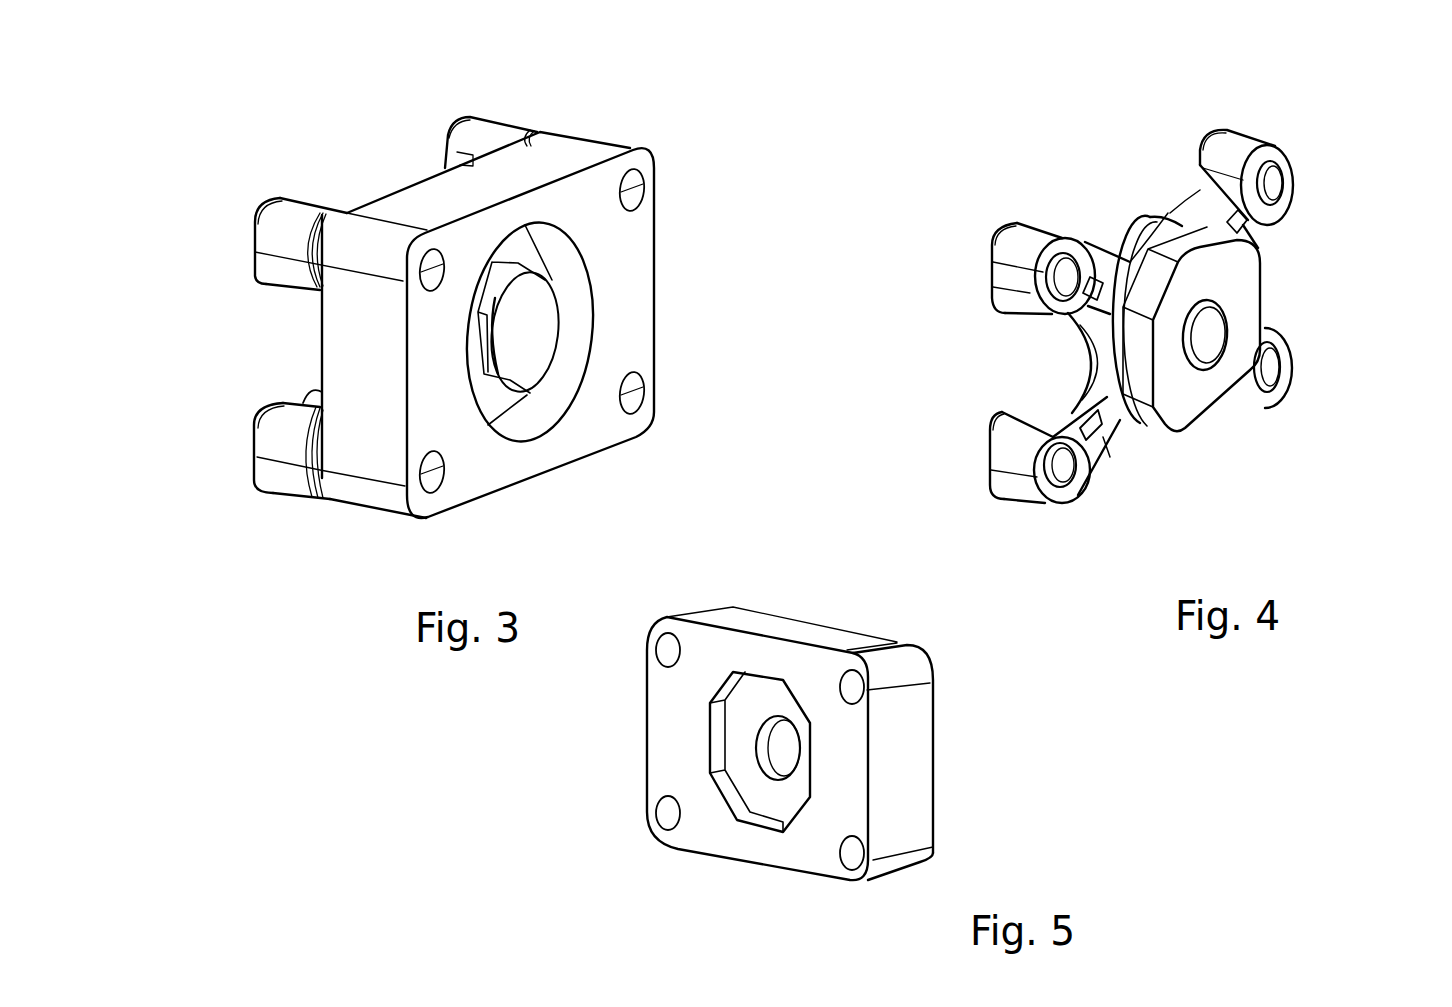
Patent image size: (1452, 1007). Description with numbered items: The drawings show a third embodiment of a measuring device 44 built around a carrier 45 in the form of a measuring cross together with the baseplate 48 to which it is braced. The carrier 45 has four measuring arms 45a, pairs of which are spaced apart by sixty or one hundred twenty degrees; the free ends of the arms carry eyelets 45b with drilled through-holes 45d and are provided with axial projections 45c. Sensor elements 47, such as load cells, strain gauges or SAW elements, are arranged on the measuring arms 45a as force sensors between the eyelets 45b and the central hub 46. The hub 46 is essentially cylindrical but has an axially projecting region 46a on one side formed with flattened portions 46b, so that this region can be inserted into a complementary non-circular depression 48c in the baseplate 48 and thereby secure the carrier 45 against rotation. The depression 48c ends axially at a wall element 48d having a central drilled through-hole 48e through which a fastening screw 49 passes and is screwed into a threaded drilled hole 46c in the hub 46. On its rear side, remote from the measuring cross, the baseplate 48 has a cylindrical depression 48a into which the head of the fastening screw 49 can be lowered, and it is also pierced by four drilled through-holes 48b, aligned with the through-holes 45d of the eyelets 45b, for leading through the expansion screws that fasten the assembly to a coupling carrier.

In FIG. 3, the measuring device 44 is at (525, 487).
In FIG. 4, the carrier 45 is at (1338, 300).
In FIG. 3, the measuring arms 45a is at (320, 390).
In FIG. 4, the measuring arms 45a is at (1210, 197).
In FIG. 3, the eyelets 45b is at (478, 128).
In FIG. 4, the eyelets 45b is at (1241, 145).
In FIG. 3, the axial projections 45c is at (465, 120).
In FIG. 4, the axial projections 45c is at (1200, 148).
In FIG. 4, the drilled through-holes 45d is at (1285, 170).
In FIG. 4, the central hub 46 is at (1222, 362).
In FIG. 4, the axially projecting region 46a is at (1220, 397).
In FIG. 4, the flattened portions 46b is at (1187, 253).
In FIG. 4, the threaded drilled hole 46c is at (1228, 325).
In FIG. 4, the sensor elements 47 is at (1093, 277).
In FIG. 3, the baseplate 48 is at (598, 453).
In FIG. 5, the baseplate 48 is at (930, 760).
In FIG. 3, the cylindrical depression 48a is at (572, 360).
In FIG. 3, the drilled through-holes 48b is at (420, 273).
In FIG. 5, the drilled through-holes 48b is at (860, 670).
In FIG. 5, the non-circular depression 48c is at (727, 800).
In FIG. 5, the wall element 48d is at (753, 700).
In FIG. 5, the central drilled through-hole 48e is at (757, 753).
In FIG. 3, the fastening screw 49 is at (536, 300).